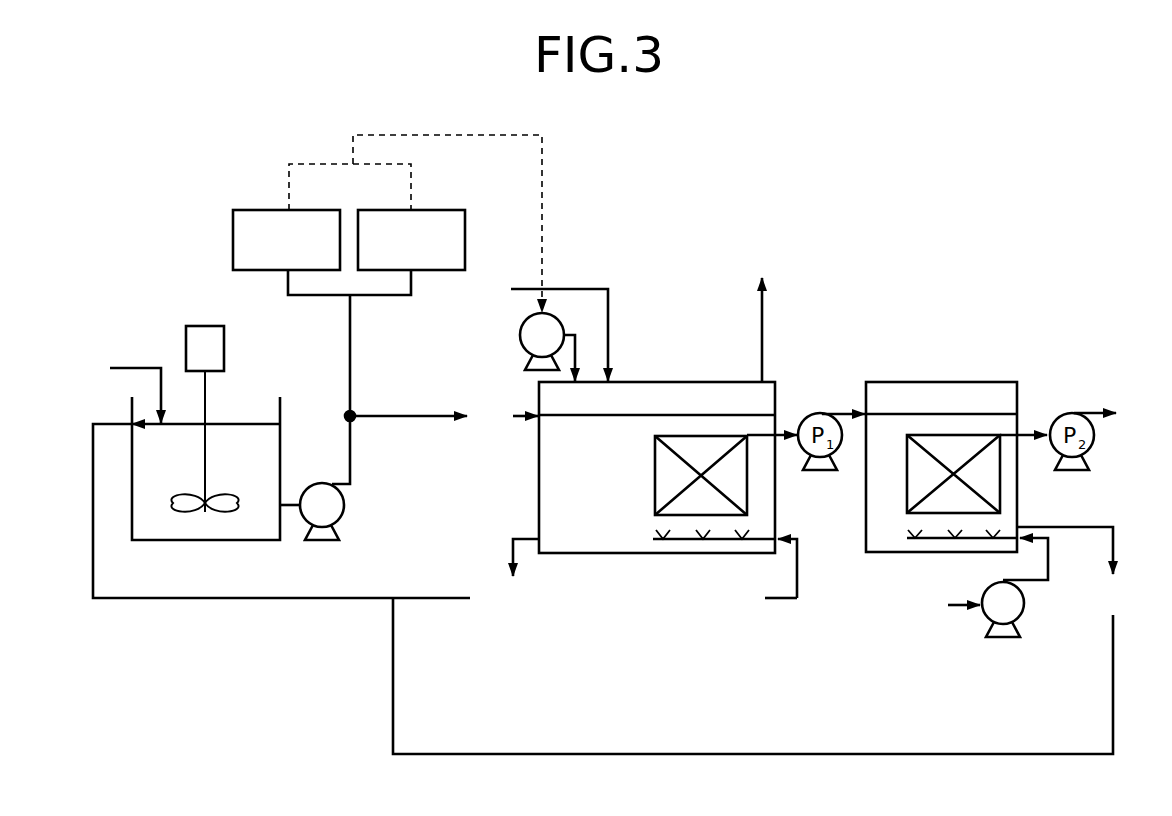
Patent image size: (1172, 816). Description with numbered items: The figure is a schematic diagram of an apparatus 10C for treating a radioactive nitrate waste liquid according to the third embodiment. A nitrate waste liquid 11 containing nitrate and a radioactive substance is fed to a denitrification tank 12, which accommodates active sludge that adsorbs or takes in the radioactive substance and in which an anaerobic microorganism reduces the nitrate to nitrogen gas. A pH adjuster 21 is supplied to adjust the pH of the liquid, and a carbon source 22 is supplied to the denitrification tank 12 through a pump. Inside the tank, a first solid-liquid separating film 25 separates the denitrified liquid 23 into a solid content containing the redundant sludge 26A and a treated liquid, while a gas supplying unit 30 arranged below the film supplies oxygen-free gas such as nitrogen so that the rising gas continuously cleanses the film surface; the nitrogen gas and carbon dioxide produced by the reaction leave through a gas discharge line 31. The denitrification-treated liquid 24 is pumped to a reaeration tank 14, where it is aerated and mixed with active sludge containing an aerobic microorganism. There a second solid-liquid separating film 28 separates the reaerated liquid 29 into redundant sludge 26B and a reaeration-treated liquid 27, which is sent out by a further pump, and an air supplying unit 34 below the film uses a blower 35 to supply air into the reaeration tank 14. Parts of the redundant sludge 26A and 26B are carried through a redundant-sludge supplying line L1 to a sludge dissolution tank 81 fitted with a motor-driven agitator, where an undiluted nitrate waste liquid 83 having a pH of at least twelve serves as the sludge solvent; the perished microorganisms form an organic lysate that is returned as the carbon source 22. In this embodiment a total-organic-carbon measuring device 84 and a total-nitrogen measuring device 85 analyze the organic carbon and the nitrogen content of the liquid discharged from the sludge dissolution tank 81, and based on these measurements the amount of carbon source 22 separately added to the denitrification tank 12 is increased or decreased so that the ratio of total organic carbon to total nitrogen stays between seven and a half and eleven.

The apparatus for treating a radioactive nitrate waste liquid 10C is at (916, 239).
The nitrate waste liquid 11 is at (444, 416).
The denitrification tank 12 is at (629, 654).
The reaeration tank 14 is at (939, 654).
The pH adjuster 21 is at (543, 329).
The carbon source 22 is at (520, 335).
The denitrified liquid 23 is at (638, 435).
The denitrification-treated liquid 24 is at (847, 394).
The first solid-liquid separating film 25 is at (655, 473).
The redundant sludge 26A is at (512, 574).
The redundant sludge 26B is at (1074, 567).
The reaeration-treated liquid 27 is at (1113, 420).
The second solid-liquid separating film 28 is at (953, 435).
The reaerated liquid 29 is at (882, 541).
The gas supplying unit 30 is at (651, 535).
The gas discharge line 31 is at (761, 321).
The air supplying unit 34 is at (995, 532).
The blower 35 is at (1024, 611).
The sludge dissolution tank 81 is at (198, 554).
The nitrate waste liquid (undiluted liquid) 83 is at (118, 389).
The total-organic-carbon measuring device 84 is at (305, 210).
The total-nitrogen measuring device 85 is at (425, 210).
The redundant-sludge supplying line L1 is at (92, 551).